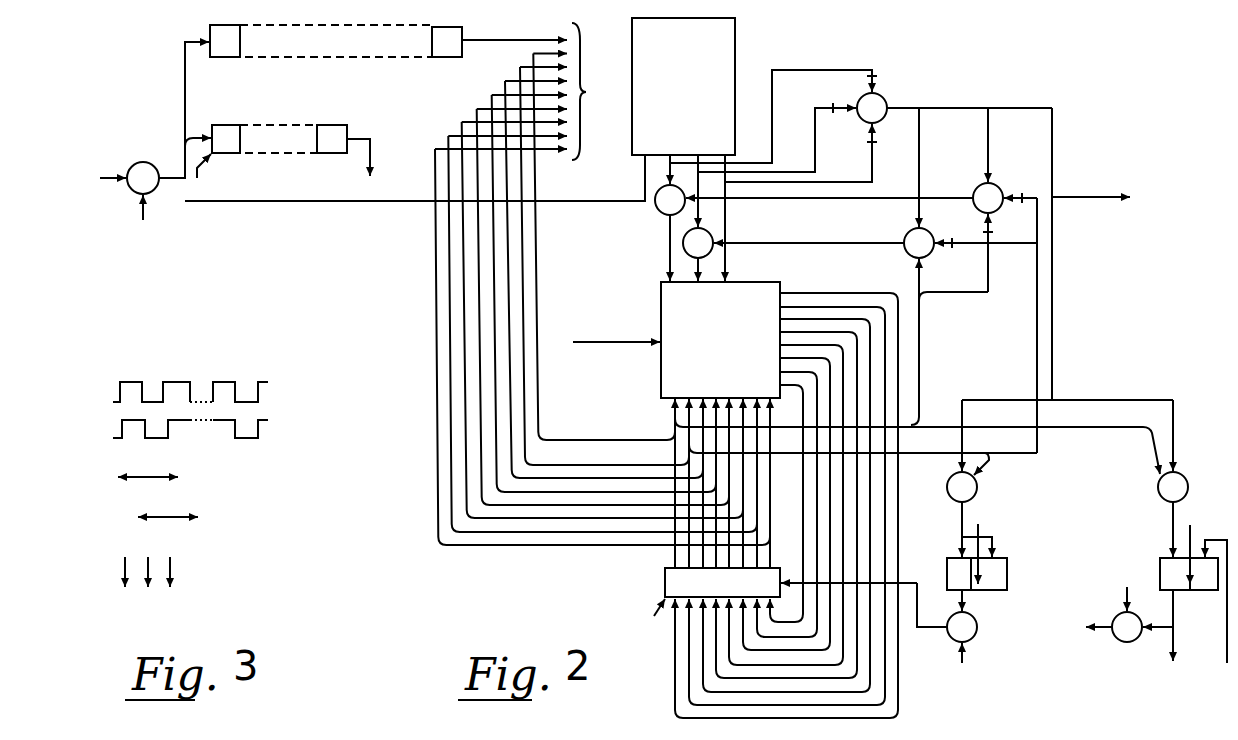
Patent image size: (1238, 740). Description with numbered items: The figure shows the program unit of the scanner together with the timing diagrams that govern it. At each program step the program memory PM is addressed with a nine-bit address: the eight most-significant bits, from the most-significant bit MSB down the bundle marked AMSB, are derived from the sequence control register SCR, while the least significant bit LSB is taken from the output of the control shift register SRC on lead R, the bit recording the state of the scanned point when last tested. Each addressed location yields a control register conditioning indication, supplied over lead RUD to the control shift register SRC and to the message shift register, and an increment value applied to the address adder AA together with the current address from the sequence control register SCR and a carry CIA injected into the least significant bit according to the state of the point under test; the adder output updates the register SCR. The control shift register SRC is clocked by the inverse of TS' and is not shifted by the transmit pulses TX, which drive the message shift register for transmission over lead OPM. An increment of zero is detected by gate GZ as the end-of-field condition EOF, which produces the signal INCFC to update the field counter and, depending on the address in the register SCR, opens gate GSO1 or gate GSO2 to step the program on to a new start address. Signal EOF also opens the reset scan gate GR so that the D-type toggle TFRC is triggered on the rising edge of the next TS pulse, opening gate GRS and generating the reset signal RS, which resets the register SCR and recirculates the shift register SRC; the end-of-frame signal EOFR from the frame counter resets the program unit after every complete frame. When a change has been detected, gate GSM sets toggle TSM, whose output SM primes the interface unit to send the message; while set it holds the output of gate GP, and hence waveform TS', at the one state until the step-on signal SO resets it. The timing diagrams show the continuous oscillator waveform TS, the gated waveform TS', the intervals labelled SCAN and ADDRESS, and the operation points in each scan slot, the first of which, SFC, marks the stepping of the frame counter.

In FIG. 2, the control shift register SRC is at (444, 58).
In FIG. 2, the lead R is at (514, 27).
In FIG. 2, the lead RUD is at (415, 178).
In FIG. 2, the lead OPM is at (369, 170).
In FIG. 2, the timing pulses TX is at (147, 206).
In FIG. 2, the timing pulse TS' is at (155, 110).
In FIG. 3, the timing pulse TS' is at (178, 434).
In FIG. 2, the least significant bit of program memory address LSB is at (528, 87).
In FIG. 2, the most significant bit of program memory address MSB is at (543, 153).
In FIG. 2, the address most significant bit lines AMSB is at (498, 547).
In FIG. 2, the program memory PM is at (683, 86).
In FIG. 2, the gate GZ is at (790, 126).
In FIG. 2, the end-of-field signal EOF is at (957, 108).
In FIG. 2, the increase field count lead INCFC is at (1124, 159).
In FIG. 2, the gate GSO1 is at (866, 280).
In FIG. 2, the gate GSO2 is at (875, 266).
In FIG. 2, the address adder AA is at (720, 340).
In FIG. 2, the carry input of adder CIA is at (658, 341).
In FIG. 2, the sequence control register SCR is at (756, 505).
In FIG. 2, the timing waveform TS is at (647, 622).
In FIG. 3, the timing waveform TS is at (178, 397).
In FIG. 2, the reset signal RS is at (922, 630).
In FIG. 2, the reset scan gate GR is at (977, 478).
In FIG. 2, the toggle TFRC is at (1003, 546).
In FIG. 2, the gate GRS is at (982, 616).
In FIG. 2, the end-of-frame signal EOFR is at (969, 668).
In FIG. 2, the gate GSM is at (1192, 478).
In FIG. 2, the toggle TSM is at (1157, 557).
In FIG. 2, the step-on signal SO is at (1219, 617).
In FIG. 2, the signal SM is at (1173, 642).
In FIG. 2, the gate GP is at (1110, 616).
In FIG. 3, the scan interval SCAN is at (148, 463).
In FIG. 3, the address interval ADDRESS is at (173, 504).
In FIG. 3, the frame counter stepping point SFC is at (154, 594).